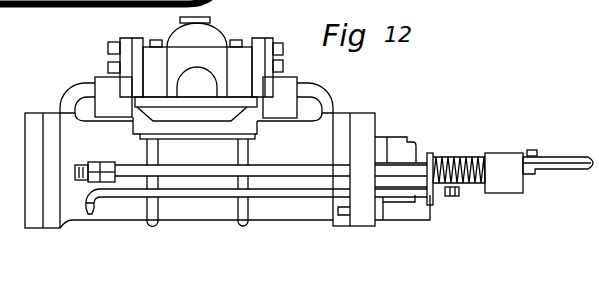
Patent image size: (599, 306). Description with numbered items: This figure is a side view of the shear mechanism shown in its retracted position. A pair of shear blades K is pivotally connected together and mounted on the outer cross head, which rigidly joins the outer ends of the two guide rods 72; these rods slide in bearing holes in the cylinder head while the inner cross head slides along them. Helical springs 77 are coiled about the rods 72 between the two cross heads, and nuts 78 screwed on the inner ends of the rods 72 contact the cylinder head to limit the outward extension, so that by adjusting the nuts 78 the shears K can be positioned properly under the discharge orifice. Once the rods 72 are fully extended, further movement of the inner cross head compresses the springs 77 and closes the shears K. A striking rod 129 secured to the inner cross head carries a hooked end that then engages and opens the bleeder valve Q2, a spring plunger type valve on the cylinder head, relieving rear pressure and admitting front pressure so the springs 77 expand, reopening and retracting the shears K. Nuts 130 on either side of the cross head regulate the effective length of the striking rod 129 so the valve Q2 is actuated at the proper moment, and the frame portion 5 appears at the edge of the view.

The frame 5 is at (187, 152).
The guide rods 72 is at (197, 165).
The nuts 78 is at (102, 163).
The striking rod 129 is at (221, 220).
The bleeder valve Q2 is at (400, 224).
The helical springs 77 is at (455, 155).
The nuts 130 is at (436, 199).
The shear blades K is at (552, 154).